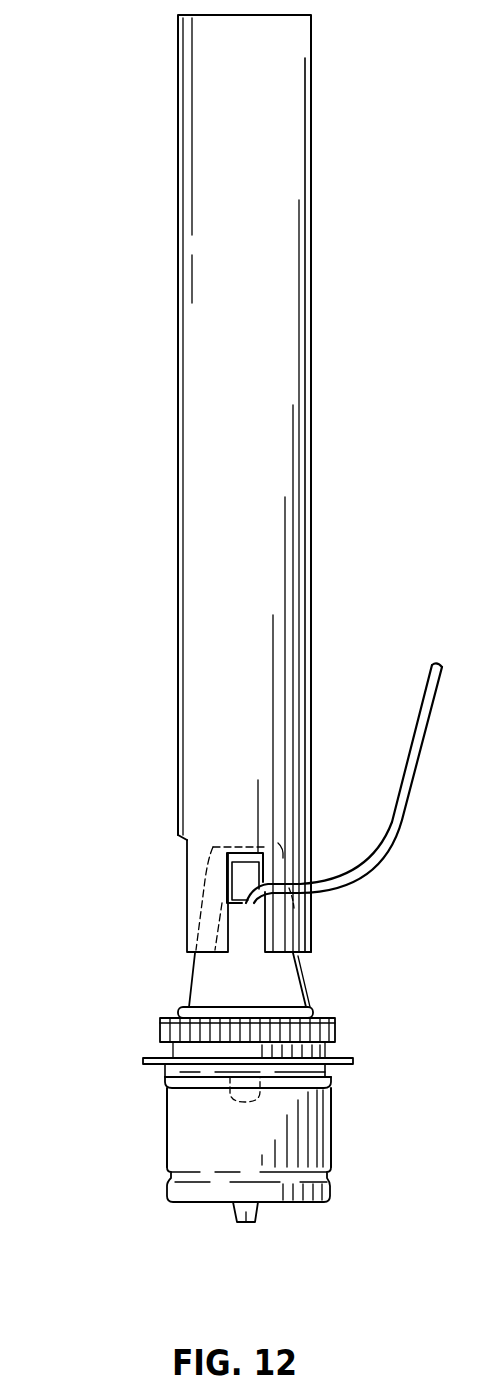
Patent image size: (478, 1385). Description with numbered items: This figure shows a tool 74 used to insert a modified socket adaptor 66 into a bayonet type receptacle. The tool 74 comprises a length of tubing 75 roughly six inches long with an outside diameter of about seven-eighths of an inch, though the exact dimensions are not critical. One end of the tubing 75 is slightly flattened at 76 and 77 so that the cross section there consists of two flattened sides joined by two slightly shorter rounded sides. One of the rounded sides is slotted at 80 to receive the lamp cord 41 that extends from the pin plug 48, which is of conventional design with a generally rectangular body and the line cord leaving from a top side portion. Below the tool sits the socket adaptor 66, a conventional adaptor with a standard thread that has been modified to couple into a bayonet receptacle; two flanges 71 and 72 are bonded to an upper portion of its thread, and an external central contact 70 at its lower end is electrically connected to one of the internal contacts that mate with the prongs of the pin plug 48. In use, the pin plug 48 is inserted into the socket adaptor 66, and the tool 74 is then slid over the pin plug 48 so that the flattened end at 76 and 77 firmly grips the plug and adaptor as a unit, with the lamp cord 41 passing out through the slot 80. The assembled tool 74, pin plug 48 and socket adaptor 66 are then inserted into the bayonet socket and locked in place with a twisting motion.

The tool 74 is at (128, 804).
The tubing 75 is at (312, 357).
The lamp cord 41 is at (417, 722).
The flattened side 76 is at (187, 892).
The flattened side 77 is at (310, 912).
The slot 80 is at (248, 932).
The pin plug 48 is at (190, 982).
The flange 71 is at (157, 1057).
The flange 72 is at (345, 1058).
The socket adaptor 66 is at (340, 1127).
The external central contact 70 is at (248, 1223).